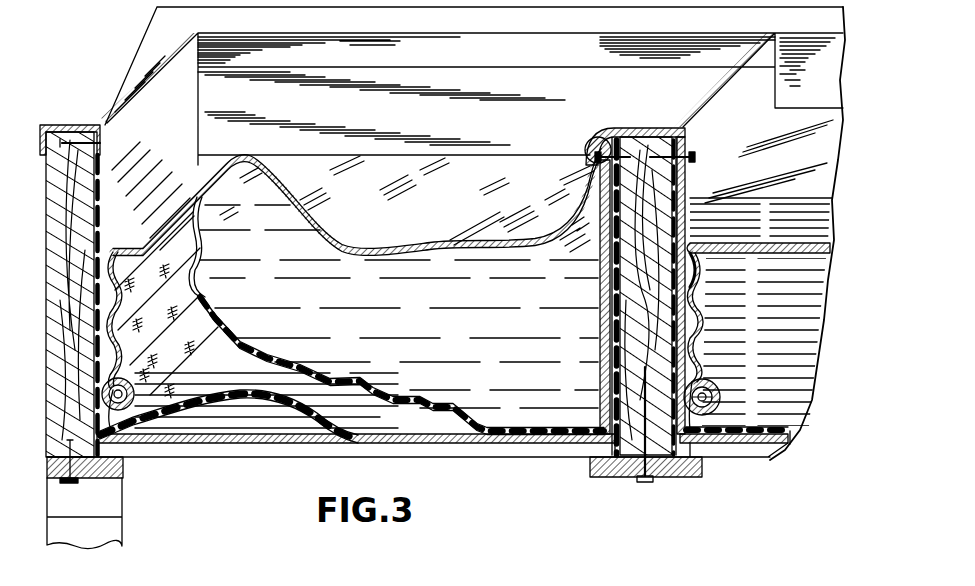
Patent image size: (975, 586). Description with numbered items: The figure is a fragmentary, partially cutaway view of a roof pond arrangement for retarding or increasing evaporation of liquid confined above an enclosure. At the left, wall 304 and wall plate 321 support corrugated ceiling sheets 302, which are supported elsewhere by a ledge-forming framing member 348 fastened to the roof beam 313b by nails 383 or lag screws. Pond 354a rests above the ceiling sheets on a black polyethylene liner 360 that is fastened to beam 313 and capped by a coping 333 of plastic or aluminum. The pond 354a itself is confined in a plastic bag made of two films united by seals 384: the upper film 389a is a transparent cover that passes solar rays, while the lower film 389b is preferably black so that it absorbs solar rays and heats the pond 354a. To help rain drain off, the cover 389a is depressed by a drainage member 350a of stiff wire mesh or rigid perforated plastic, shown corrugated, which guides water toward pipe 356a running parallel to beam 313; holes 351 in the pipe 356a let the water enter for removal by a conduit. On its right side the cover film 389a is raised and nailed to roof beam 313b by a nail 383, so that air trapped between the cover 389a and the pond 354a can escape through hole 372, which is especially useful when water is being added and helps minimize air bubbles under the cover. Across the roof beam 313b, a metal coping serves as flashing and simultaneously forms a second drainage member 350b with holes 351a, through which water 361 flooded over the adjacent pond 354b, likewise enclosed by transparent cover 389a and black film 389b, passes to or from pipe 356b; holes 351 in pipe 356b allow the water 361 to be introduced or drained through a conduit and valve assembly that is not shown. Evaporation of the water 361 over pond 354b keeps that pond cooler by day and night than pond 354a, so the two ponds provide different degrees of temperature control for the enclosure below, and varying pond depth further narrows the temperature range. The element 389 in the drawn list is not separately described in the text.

The corrugated ceiling sheets 302 is at (478, 458).
The wall 304 is at (107, 528).
The beam 313 is at (55, 150).
The roof beam 313b is at (677, 478).
The wall plate 321 is at (122, 478).
The coping 333 is at (718, 74).
The ledge-forming framing member 348 is at (605, 470).
The drainage member 350a is at (167, 212).
The drainage member 350b is at (705, 325).
The holes 351 is at (125, 420).
The holes 351a is at (705, 277).
The pond 354a is at (443, 340).
The pond 354b is at (810, 327).
The pipe 356a is at (130, 408).
The pipe 356b is at (720, 397).
The black polyethylene liner 360 is at (437, 445).
The water 361 is at (385, 265).
The hole 372 is at (570, 210).
The nails 383 is at (582, 154).
The seals 384 is at (203, 300).
The membrane 389 is at (797, 423).
The cover film 389a is at (378, 203).
The film 389b is at (388, 386).